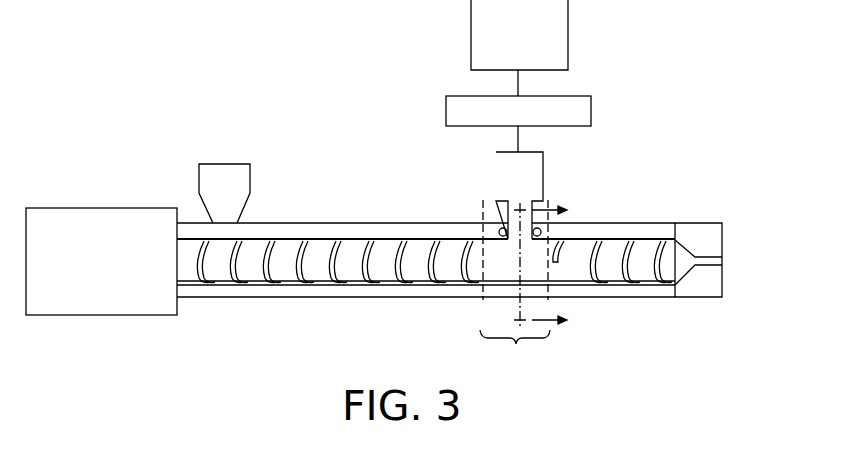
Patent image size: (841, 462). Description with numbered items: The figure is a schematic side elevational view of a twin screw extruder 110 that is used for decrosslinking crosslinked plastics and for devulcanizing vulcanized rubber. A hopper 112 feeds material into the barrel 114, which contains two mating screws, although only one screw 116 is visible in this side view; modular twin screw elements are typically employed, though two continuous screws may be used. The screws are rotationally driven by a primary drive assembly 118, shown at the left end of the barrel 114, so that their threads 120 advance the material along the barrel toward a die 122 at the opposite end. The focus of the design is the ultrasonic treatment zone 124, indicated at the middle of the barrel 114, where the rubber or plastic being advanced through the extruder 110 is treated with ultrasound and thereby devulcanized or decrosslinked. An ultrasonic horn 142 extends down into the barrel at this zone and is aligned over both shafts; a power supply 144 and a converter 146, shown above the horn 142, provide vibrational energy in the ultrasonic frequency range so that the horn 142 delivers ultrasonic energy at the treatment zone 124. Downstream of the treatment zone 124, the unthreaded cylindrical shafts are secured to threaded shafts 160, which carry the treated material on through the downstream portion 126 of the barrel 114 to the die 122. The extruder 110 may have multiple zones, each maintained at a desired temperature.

The twin screw extruder 110 is at (85, 151).
The hopper 112 is at (225, 173).
The barrel 114 is at (258, 232).
The screw 116 is at (373, 268).
The primary drive assembly 118 is at (106, 272).
The threads 120 is at (300, 275).
The die 122 is at (702, 234).
The ultrasonic treatment zone 124 is at (532, 285).
The barrel downstream section 126 is at (622, 230).
The ultrasonic horn 142 is at (538, 178).
The power supply 144 is at (568, 35).
The converter 146 is at (591, 110).
The threaded shafts 160 is at (600, 272).